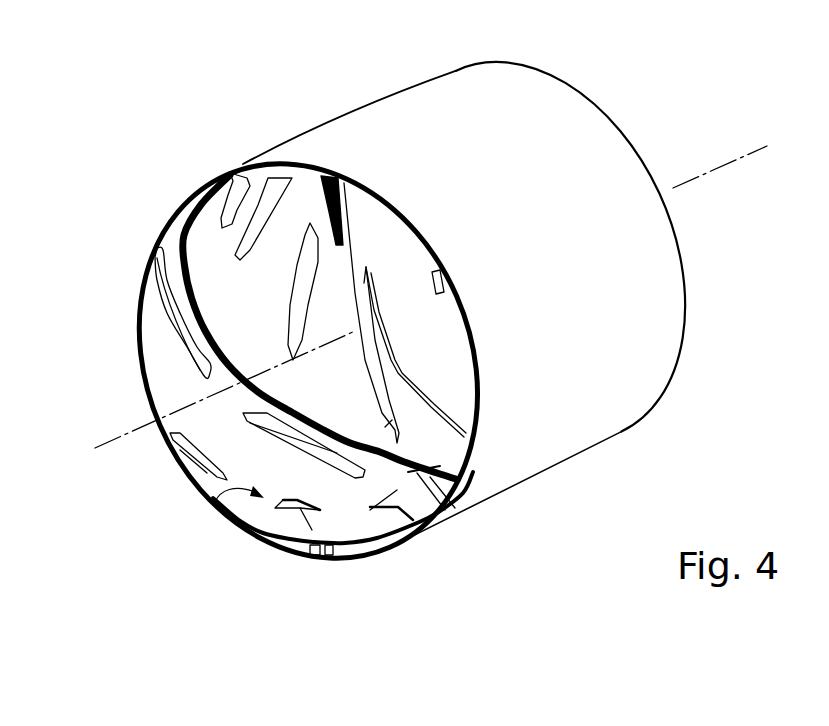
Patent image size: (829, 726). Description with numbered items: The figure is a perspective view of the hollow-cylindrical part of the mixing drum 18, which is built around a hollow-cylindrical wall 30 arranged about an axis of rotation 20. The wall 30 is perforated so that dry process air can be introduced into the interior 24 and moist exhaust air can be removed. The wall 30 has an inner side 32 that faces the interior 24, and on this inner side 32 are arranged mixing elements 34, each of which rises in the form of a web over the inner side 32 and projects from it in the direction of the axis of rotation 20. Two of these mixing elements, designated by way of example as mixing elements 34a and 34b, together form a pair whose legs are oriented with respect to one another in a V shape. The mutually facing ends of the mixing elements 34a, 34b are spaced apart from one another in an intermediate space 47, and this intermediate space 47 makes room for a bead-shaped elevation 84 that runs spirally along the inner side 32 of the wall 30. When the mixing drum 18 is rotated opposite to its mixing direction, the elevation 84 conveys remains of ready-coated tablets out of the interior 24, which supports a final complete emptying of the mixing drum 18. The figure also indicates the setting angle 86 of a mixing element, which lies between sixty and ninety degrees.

The mixing drum 18 is at (268, 106).
The axis of rotation 20 is at (710, 171).
The interior 24 is at (345, 395).
The hollow-cylindrical wall 30 is at (530, 450).
The inner side 32 is at (217, 500).
The mixing elements 34 is at (405, 636).
The first mixing element 34a is at (317, 465).
The second mixing element 34b is at (374, 430).
The intermediate space 47 is at (405, 480).
The bead-shaped elevation 84 is at (210, 327).
The setting angle 86 is at (274, 440).